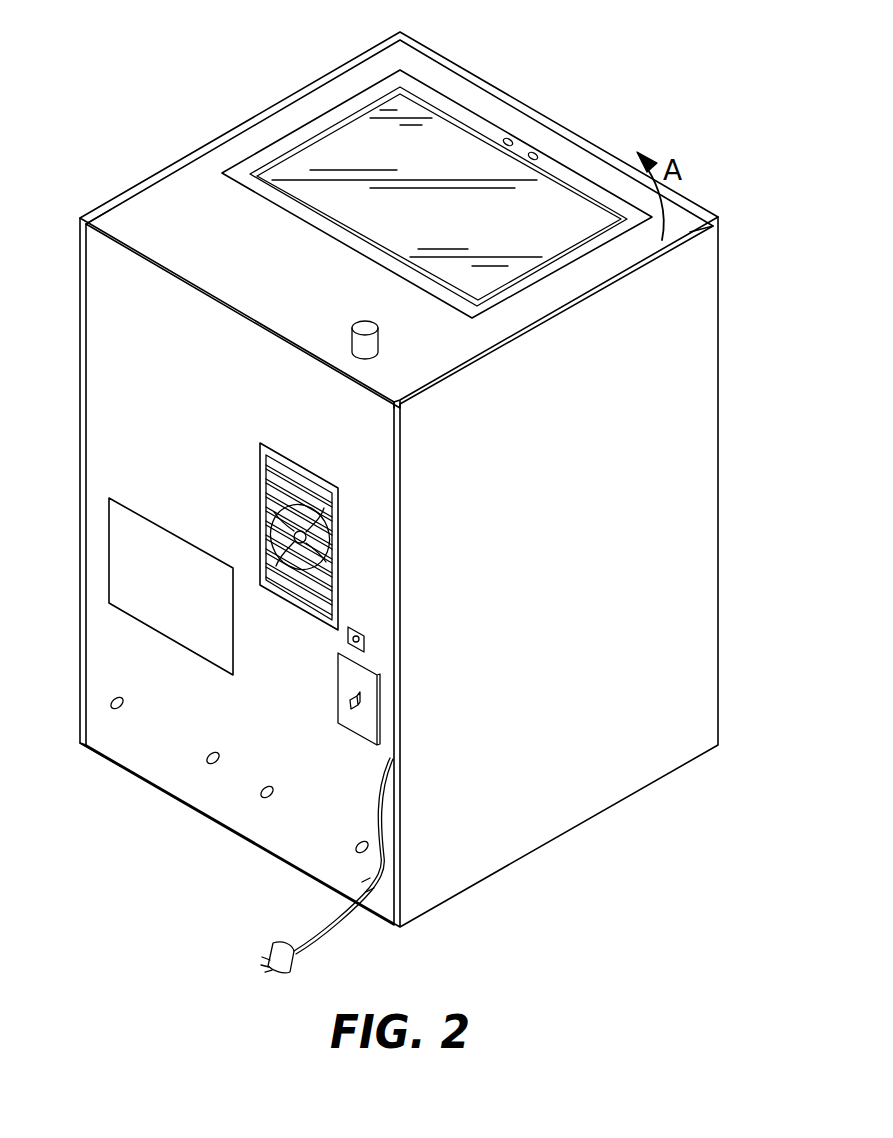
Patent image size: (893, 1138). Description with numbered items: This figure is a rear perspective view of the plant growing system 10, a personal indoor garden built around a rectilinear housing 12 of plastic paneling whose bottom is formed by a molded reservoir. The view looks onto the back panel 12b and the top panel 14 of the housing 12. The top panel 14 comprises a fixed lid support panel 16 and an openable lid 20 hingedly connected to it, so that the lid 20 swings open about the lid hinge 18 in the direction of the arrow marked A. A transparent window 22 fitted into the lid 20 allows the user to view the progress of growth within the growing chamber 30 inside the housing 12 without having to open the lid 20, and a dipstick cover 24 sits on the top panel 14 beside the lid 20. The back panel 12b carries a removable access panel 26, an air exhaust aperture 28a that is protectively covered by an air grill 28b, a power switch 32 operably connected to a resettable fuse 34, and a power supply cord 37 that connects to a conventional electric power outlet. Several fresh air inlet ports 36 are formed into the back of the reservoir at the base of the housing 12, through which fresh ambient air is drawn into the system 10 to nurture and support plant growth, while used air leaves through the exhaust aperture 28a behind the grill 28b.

The plant growing system 10 is at (551, 112).
The housing 12 is at (718, 372).
The back panel 12b is at (105, 758).
The top panel 14 is at (447, 63).
The lid support panel 16 is at (155, 215).
The lid hinge 18 is at (193, 193).
The lid 20 is at (672, 220).
The transparent window 22 is at (354, 147).
The dipstick cover 24 is at (350, 340).
The access panel 26 is at (142, 511).
The air exhaust aperture 28a is at (303, 548).
The air grill 28b is at (300, 465).
The growing chamber 30 is at (338, 583).
The power switch 32 is at (380, 710).
The fuse 34 is at (362, 623).
The fresh air inlet port 36 is at (207, 766).
The power supply cord 37 is at (337, 932).